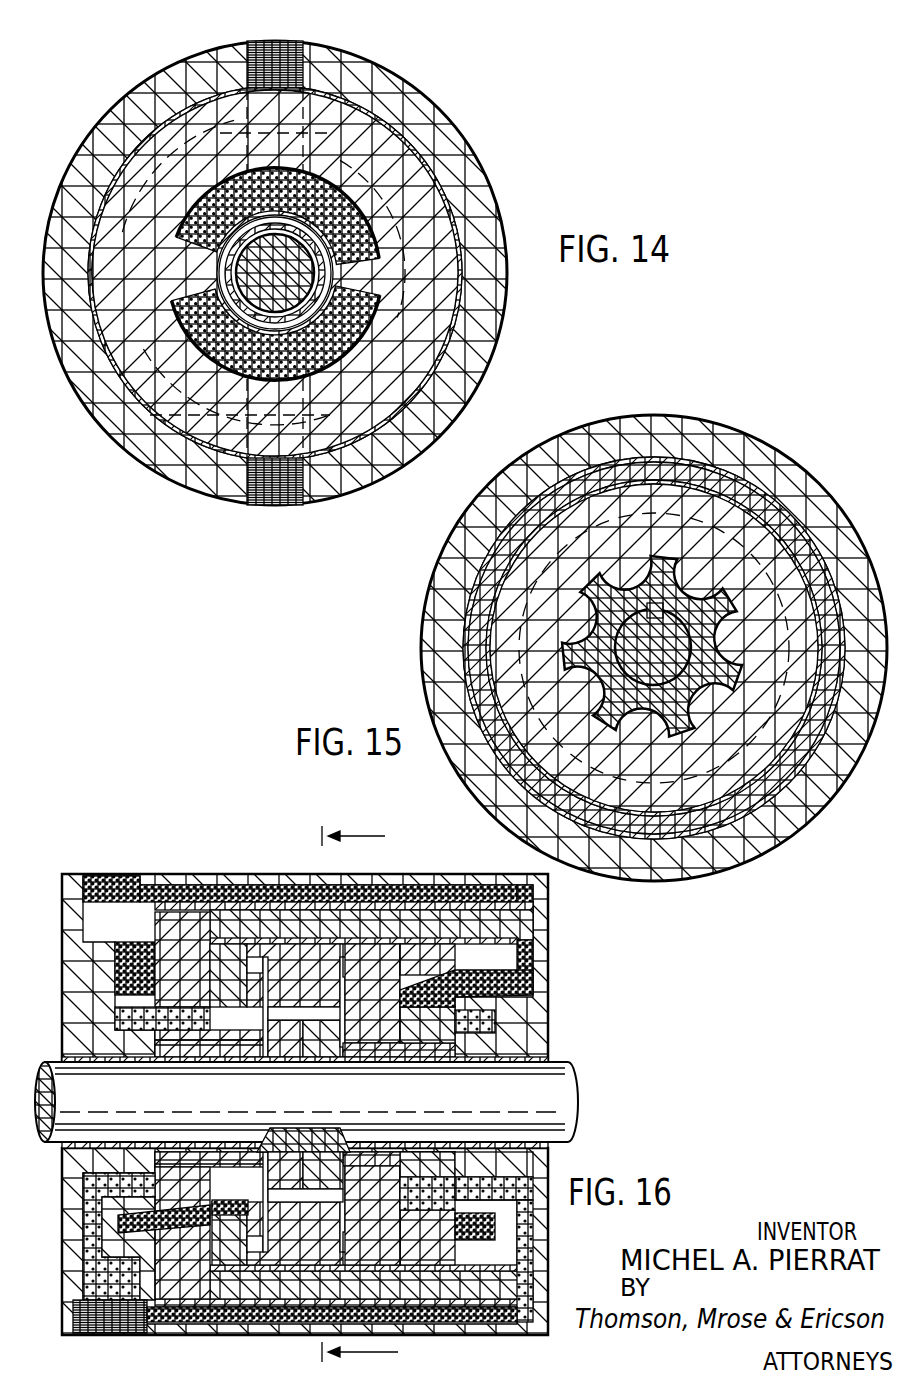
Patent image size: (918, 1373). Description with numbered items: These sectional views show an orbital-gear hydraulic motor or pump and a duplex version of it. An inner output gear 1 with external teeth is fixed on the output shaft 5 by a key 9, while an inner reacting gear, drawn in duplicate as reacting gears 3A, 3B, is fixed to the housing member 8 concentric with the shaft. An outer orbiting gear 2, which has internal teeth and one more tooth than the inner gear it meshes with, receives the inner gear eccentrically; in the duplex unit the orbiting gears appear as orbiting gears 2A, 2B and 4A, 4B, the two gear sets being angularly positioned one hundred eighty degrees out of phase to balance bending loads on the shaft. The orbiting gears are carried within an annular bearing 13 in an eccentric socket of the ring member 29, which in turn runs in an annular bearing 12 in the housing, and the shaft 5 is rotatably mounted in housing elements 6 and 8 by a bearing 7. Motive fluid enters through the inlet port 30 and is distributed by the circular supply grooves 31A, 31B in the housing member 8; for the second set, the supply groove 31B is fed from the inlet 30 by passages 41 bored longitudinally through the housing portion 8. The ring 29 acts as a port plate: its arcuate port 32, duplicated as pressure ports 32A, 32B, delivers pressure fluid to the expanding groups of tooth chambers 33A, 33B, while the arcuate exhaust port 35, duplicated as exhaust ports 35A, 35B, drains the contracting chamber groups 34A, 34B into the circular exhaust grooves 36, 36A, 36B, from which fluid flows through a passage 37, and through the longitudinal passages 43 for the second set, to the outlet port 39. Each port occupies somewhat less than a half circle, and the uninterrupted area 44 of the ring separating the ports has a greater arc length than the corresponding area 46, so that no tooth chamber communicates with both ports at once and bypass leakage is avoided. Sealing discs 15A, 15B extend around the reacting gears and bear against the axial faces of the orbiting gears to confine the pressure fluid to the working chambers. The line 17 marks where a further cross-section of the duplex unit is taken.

In FIG. 15, the inner output gear 1 is at (577, 617).
In FIG. 16, the inner output gear 1 is at (275, 1166).
In FIG. 15, the outer orbiting gear 2 is at (515, 577).
In FIG. 16, the outer orbiting gear (first set) 2A is at (320, 965).
In FIG. 16, the outer orbiting gear (second set) 2B is at (352, 982).
In FIG. 16, the inner reacting gear (first set) 3A is at (205, 1166).
In FIG. 16, the inner reacting gear (second set) 3B is at (408, 1176).
In FIG. 16, the outer orbiting gear (first set) 4A is at (185, 960).
In FIG. 16, the outer orbiting gear (second set) 4B is at (415, 992).
In FIG. 14, the output shaft 5 is at (278, 282).
In FIG. 15, the output shaft 5 is at (653, 659).
In FIG. 16, the output shaft 5 is at (580, 1085).
In FIG. 16, the housing element 6 is at (540, 1022).
In FIG. 16, the bearing 7 is at (548, 1059).
In FIG. 14, the housing member 8 is at (490, 225).
In FIG. 15, the housing member 8 is at (548, 452).
In FIG. 16, the housing member 8 is at (100, 927).
In FIG. 16, the key 9 is at (310, 1130).
In FIG. 14, the annular bearing 12 is at (395, 152).
In FIG. 15, the annular bearing 12 is at (742, 488).
In FIG. 16, the annular bearing 12 is at (500, 906).
In FIG. 15, the annular bearing 13 is at (762, 530).
In FIG. 16, the annular bearing 13 is at (512, 940).
In FIG. 16, the sealing disc (first set) 15A is at (290, 960).
In FIG. 16, the sealing disc (second set) 15B is at (385, 962).
In FIG. 16, the section line 17 is at (379, 1096).
In FIG. 14, the ring member 29 is at (420, 185).
In FIG. 15, the ring member 29 is at (547, 506).
In FIG. 16, the ring member 29 is at (435, 962).
In FIG. 14, the inlet port 30 is at (285, 42).
In FIG. 16, the inlet port 30 is at (100, 880).
In FIG. 16, the fluid supply groove (first set) 31A is at (140, 1225).
In FIG. 16, the annular fluid supply groove (second set) 31B is at (470, 985).
In FIG. 14, the arcuate port 32 is at (352, 322).
In FIG. 16, the arcuate pressure port (first set) 32A is at (190, 1228).
In FIG. 16, the arcuate pressure port (second set) 32B is at (480, 1226).
In FIG. 16, the group of expanding tooth chambers (first set) 33A is at (238, 1212).
In FIG. 16, the group of expanding tooth chambers (second set) 33B is at (392, 1212).
In FIG. 16, the group of contracting tooth chambers (first set) 34A is at (228, 975).
In FIG. 16, the group of contracting tooth chambers (second set) 34B is at (442, 1180).
In FIG. 14, the arcuate exhaust port 35 is at (340, 215).
In FIG. 16, the arcuate exhaust port (first set) 35A is at (172, 893).
In FIG. 16, the arcuate exhaust port (second set) 35B is at (550, 1135).
In FIG. 14, the circular exhaust groove 36 is at (272, 506).
In FIG. 16, the exhaust fluid groove (first set) 36A is at (135, 1022).
In FIG. 16, the annular exhaust fluid groove (second set) 36B is at (548, 1165).
In FIG. 16, the passage 37 is at (95, 1222).
In FIG. 16, the outlet port 39 is at (105, 1332).
In FIG. 16, the passages 41 is at (522, 888).
In FIG. 16, the passages 43 is at (430, 1322).
In FIG. 14, the uninterrupted area 44 is at (112, 398).
In FIG. 14, the uninterrupted area 46 is at (332, 275).